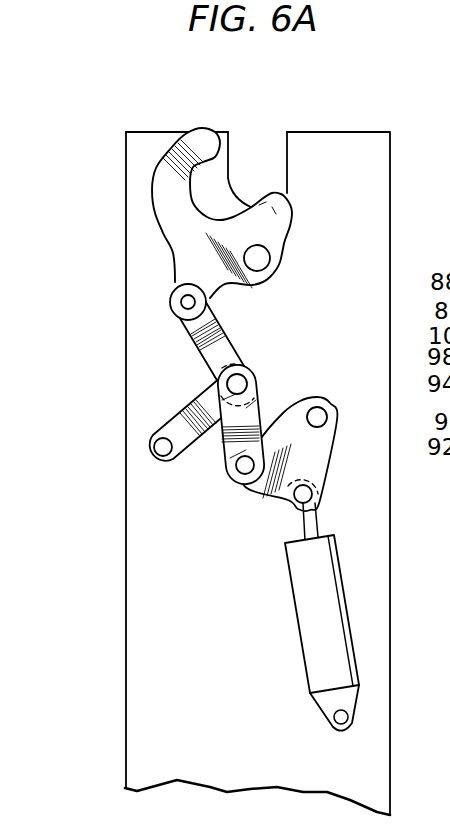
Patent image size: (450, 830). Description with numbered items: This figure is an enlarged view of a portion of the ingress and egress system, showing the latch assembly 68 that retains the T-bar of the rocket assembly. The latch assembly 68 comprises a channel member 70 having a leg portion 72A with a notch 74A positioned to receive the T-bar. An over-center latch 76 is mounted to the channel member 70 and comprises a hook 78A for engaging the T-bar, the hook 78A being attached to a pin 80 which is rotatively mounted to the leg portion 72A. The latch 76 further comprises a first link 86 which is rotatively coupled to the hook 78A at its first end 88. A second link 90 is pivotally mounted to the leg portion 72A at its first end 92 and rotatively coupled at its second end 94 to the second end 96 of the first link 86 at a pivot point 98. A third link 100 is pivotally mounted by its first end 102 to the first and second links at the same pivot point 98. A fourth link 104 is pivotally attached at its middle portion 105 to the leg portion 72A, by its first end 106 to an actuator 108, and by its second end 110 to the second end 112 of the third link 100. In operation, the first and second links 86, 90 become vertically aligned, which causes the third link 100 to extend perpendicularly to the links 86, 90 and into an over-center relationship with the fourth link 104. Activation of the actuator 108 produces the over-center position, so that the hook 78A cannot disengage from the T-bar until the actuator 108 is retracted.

The latch assembly 68 is at (176, 215).
The channel member 70 is at (133, 597).
The leg portion 72A is at (140, 555).
The notch 74A is at (231, 152).
The over-center latch 76 is at (86, 217).
The hook 78A is at (204, 136).
The pin 80 is at (262, 262).
The first link 86 is at (176, 346).
The first end of first link 88 is at (158, 275).
The second link 90 is at (166, 421).
The first end of second link 92 is at (152, 440).
The second end of second link 94 is at (186, 390).
The second end of first link 96 is at (241, 371).
The pivot point 98 is at (249, 378).
The third link 100 is at (250, 432).
The first end of third link 102 is at (297, 412).
The fourth link 104 is at (296, 463).
The middle portion of fourth link 105 is at (324, 413).
The first end of fourth link 106 is at (294, 512).
The actuator 108 is at (316, 669).
The second end of fourth link 110 is at (242, 494).
The second end of third link 112 is at (234, 469).